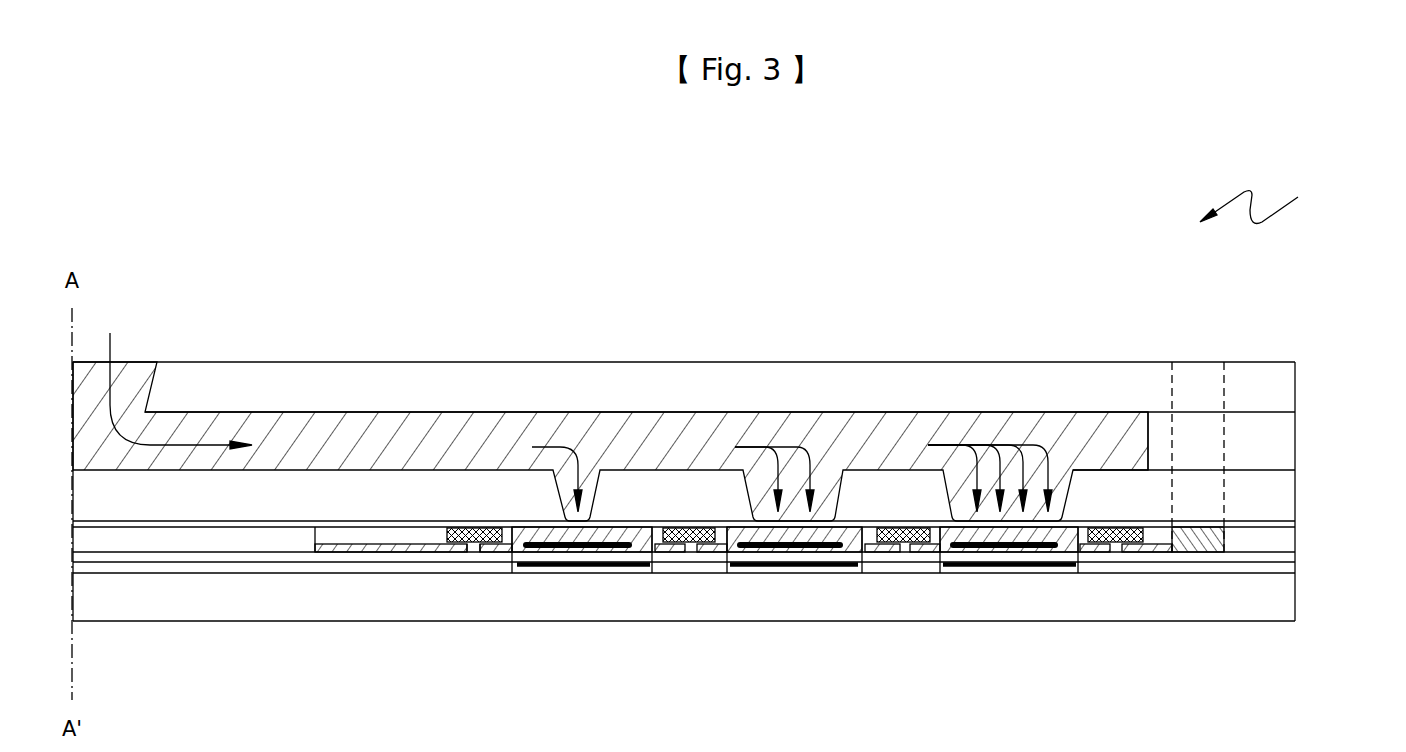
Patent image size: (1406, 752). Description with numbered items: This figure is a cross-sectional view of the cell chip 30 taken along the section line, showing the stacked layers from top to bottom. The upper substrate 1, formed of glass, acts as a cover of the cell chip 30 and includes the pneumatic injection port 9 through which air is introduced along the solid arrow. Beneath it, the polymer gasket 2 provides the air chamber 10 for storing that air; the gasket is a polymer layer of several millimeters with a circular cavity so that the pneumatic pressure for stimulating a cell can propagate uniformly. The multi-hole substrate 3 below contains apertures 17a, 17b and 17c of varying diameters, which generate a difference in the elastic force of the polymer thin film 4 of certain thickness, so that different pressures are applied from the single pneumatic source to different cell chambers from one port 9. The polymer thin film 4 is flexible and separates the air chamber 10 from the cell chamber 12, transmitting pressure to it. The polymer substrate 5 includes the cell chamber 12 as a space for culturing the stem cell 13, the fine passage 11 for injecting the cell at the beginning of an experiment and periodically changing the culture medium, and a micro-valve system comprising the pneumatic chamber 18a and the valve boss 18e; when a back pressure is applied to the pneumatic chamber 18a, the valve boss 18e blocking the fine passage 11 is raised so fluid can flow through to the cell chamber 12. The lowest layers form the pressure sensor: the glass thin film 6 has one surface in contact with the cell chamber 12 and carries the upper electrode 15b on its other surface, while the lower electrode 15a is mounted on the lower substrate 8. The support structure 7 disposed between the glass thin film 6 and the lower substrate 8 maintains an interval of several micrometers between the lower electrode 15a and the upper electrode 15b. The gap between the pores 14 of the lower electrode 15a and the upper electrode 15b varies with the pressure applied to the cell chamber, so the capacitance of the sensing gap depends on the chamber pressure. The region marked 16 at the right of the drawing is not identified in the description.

The upper substrate 1 is at (1277, 390).
The polymer gasket 2 is at (1277, 437).
The multi-hole substrate 3 is at (1277, 492).
The polymer thin film 4 is at (1283, 523).
The polymer substrate 5 is at (1277, 538).
The glass thin film 6 is at (1280, 557).
The support structure 7 is at (1268, 567).
The lower substrate 8 is at (1272, 607).
The pneumatic injection port 9 is at (128, 378).
The air chamber 10 is at (693, 440).
The fine passage 11 is at (328, 552).
The cell chamber 12 is at (853, 541).
The stem cell 13 is at (967, 552).
The pores 14 is at (730, 573).
The lower electrode 15a is at (547, 573).
The upper electrode 15b is at (622, 573).
The light blocking member 16 is at (1196, 378).
The aperture 17a is at (590, 483).
The aperture 17b is at (827, 487).
The aperture 17c is at (1063, 487).
The micro-valve pneumatic chamber 18a is at (475, 527).
The valve boss 18e is at (474, 545).
The cell chip 30 is at (1273, 198).